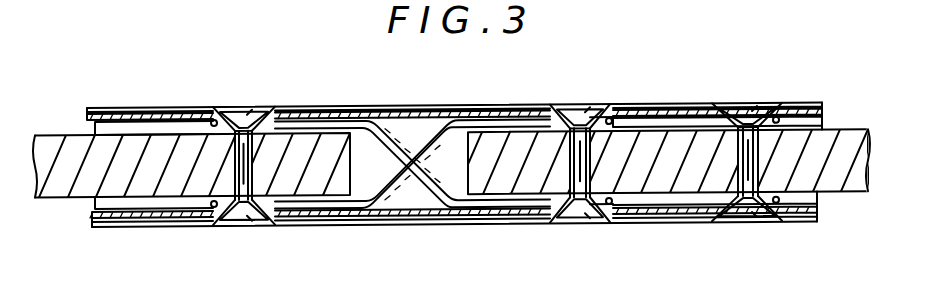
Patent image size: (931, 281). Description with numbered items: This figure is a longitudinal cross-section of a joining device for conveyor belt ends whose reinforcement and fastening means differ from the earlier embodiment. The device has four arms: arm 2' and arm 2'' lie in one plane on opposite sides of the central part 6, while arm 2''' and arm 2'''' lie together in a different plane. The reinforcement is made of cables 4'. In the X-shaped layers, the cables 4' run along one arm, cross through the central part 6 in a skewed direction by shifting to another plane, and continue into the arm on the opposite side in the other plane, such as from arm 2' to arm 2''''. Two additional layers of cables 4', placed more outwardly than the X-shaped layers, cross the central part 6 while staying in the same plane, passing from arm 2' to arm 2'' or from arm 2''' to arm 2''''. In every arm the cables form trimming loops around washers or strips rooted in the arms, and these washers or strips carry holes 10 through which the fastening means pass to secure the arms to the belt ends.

The arm 2' is at (150, 98).
The holes 10 is at (274, 107).
The cables 4' is at (412, 89).
The central part 6 is at (417, 133).
The arm 2'' is at (717, 95).
The arm 2''' is at (151, 235).
The arm 2'''' is at (715, 232).